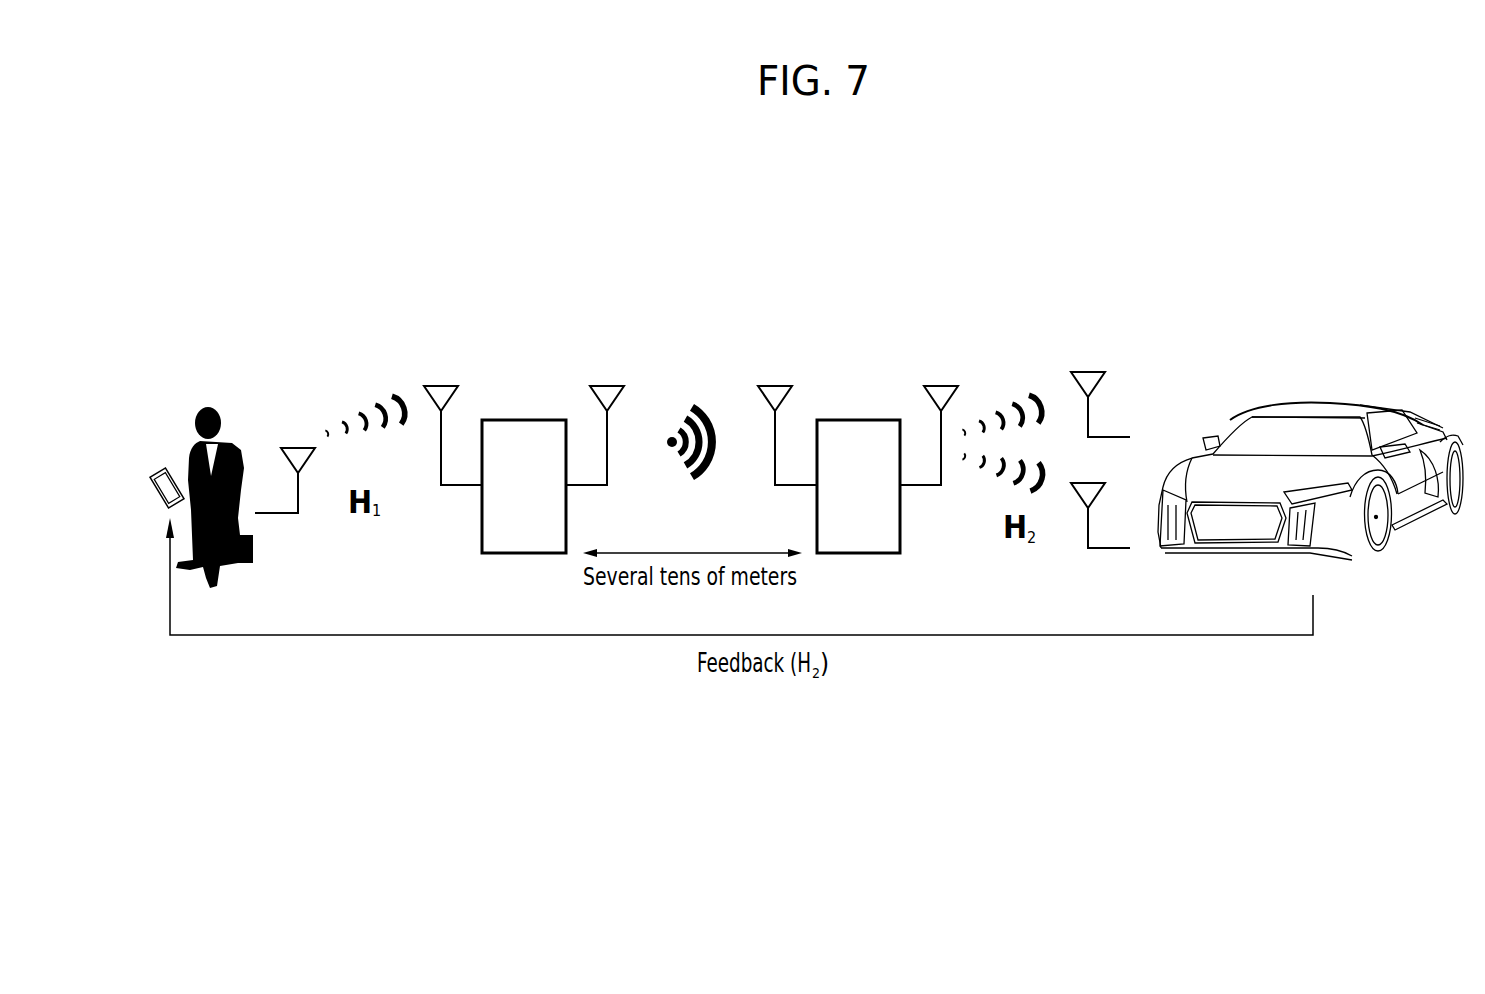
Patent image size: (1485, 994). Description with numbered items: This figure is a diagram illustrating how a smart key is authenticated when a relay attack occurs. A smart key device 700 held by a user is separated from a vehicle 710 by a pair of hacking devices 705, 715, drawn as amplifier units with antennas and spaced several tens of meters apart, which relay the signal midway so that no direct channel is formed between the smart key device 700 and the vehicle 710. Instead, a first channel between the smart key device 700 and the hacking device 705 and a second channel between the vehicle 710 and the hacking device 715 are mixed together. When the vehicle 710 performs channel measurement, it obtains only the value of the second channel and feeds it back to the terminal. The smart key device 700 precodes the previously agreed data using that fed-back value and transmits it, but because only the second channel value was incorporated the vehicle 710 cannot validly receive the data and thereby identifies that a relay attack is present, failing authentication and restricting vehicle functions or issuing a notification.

The smart key device 700 is at (152, 470).
The hacking device 705 is at (522, 419).
The hacking device 715 is at (858, 419).
The vehicle 710 is at (1325, 403).